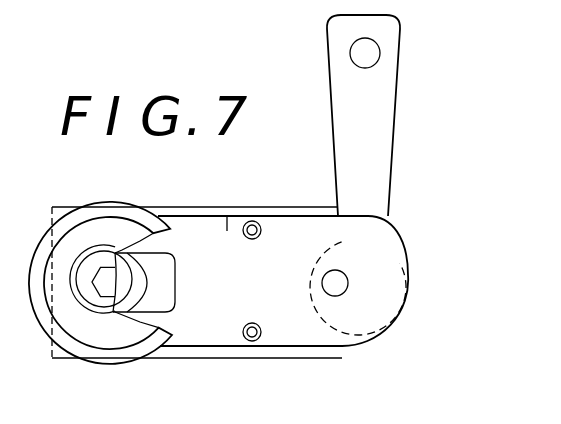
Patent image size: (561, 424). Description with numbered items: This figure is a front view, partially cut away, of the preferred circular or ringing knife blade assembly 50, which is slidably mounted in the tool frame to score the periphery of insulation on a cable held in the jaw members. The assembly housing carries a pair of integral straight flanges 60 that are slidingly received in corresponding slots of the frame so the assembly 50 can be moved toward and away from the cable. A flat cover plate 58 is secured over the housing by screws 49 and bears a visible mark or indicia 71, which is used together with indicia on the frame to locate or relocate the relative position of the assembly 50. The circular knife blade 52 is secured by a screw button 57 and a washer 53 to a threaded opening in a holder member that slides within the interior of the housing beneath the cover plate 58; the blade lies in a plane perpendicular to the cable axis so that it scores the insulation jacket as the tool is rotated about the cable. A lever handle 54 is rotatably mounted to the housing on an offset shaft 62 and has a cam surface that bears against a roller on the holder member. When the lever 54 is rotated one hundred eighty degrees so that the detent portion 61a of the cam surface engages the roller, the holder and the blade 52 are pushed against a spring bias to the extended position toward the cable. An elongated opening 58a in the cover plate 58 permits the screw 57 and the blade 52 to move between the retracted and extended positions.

The screws 49 is at (252, 240).
The circular knife blade assembly 50 is at (155, 358).
The circular knife blade 52 is at (110, 357).
The washer 53 is at (90, 250).
The lever handle 54 is at (387, 87).
The screw button 57 is at (103, 260).
The cover plate 58 is at (297, 333).
The elongated opening 58a is at (172, 287).
The straight flanges 60 is at (280, 206).
The detent portion 61a is at (405, 272).
The offset shaft 62 is at (347, 280).
The indicia 71 is at (229, 221).